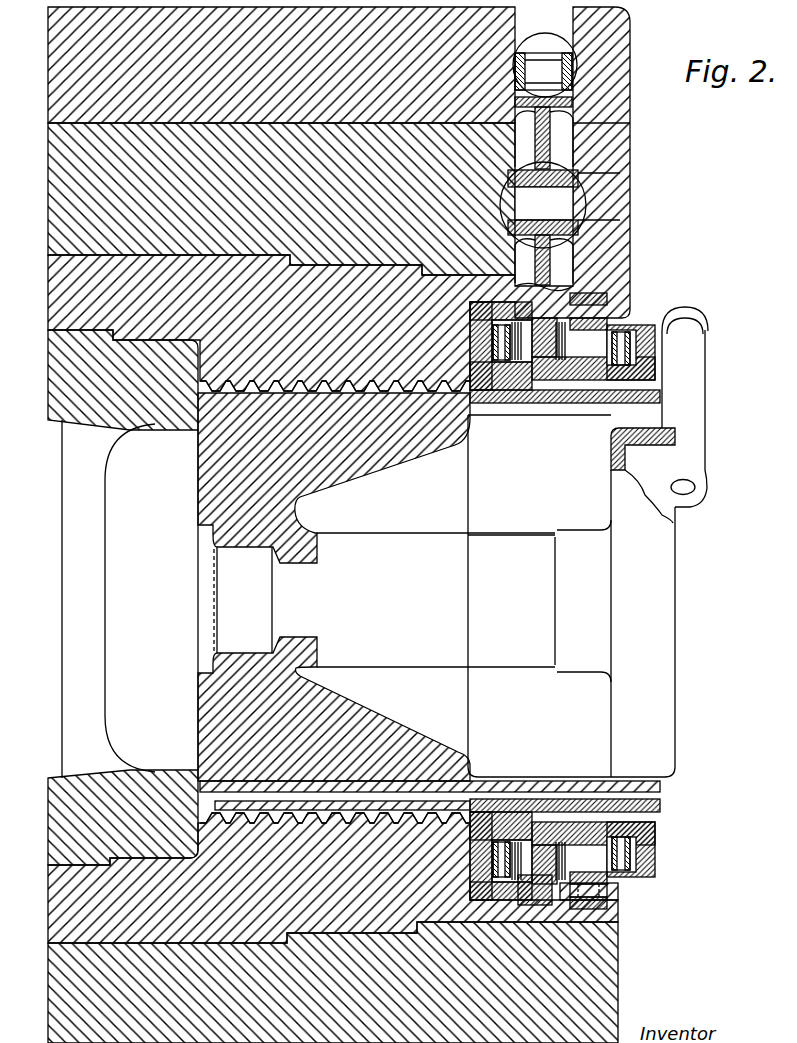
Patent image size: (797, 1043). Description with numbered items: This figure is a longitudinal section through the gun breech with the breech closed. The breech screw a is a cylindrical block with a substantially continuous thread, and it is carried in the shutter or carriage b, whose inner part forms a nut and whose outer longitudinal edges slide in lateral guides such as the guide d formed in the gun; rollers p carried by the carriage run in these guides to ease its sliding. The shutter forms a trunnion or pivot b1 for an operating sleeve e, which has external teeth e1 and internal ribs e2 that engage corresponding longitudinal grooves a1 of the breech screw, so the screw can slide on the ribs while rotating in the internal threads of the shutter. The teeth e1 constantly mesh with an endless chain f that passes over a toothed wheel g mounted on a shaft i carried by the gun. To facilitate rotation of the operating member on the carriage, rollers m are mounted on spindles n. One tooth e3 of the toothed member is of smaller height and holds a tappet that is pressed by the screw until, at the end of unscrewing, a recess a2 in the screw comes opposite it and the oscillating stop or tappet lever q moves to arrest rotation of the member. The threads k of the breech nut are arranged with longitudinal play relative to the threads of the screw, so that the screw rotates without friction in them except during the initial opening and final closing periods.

The breech screw a is at (335, 452).
The longitudinal grooves a1 is at (662, 789).
The recess a2 is at (300, 760).
The shutter or carriage b is at (470, 392).
The trunnion or pivot b1 is at (508, 404).
The lateral guide d is at (617, 891).
The operating member or sleeve e is at (597, 381).
The external teeth e1 is at (602, 300).
The internal ribs e2 is at (655, 806).
The frusto-conical tooth e3 is at (560, 845).
The endless chain f is at (556, 68).
The toothed wheel g is at (575, 109).
The shaft i is at (640, 180).
The threads of the breech nut k is at (378, 390).
The rollers m is at (534, 318).
The spindles n is at (655, 356).
The rollers p is at (580, 330).
The oscillating stop or tappet lever q is at (540, 898).